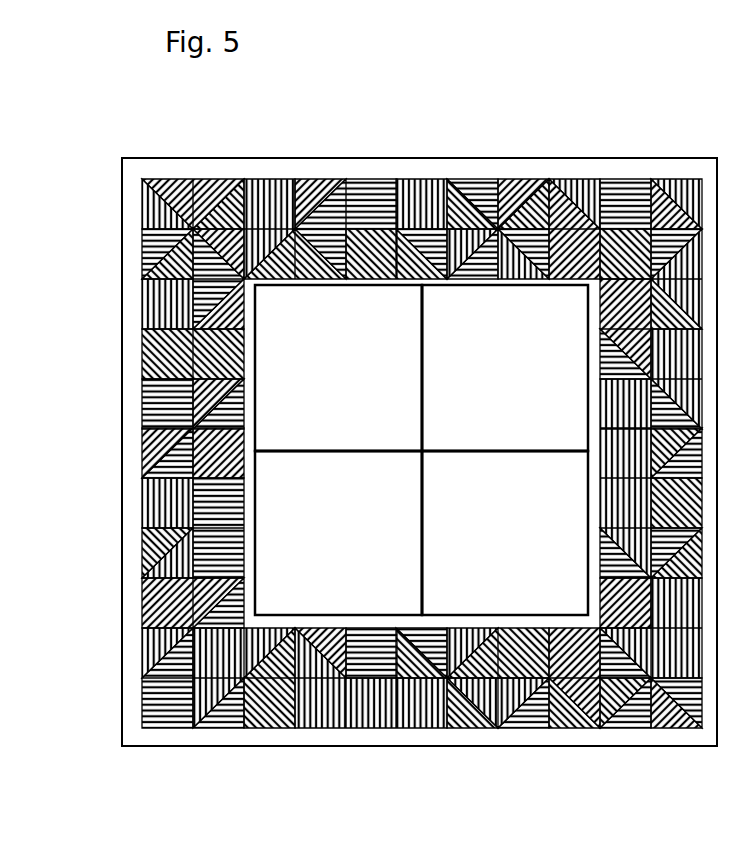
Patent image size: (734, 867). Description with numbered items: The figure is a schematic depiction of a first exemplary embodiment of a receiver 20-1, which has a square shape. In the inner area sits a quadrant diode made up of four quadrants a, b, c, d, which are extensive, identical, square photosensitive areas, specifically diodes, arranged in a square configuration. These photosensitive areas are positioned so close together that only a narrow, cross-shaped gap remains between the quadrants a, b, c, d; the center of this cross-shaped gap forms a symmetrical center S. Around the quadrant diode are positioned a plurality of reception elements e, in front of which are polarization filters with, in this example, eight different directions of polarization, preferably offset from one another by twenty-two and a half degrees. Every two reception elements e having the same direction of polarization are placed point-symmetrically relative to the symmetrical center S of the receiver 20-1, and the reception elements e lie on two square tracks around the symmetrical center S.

The receiver 20-1 is at (385, 168).
The quadrant a is at (287, 325).
The quadrant b is at (530, 365).
The quadrant c is at (539, 593).
The quadrant d is at (318, 585).
The symmetrical center S is at (421, 451).
The reception element e is at (650, 262).